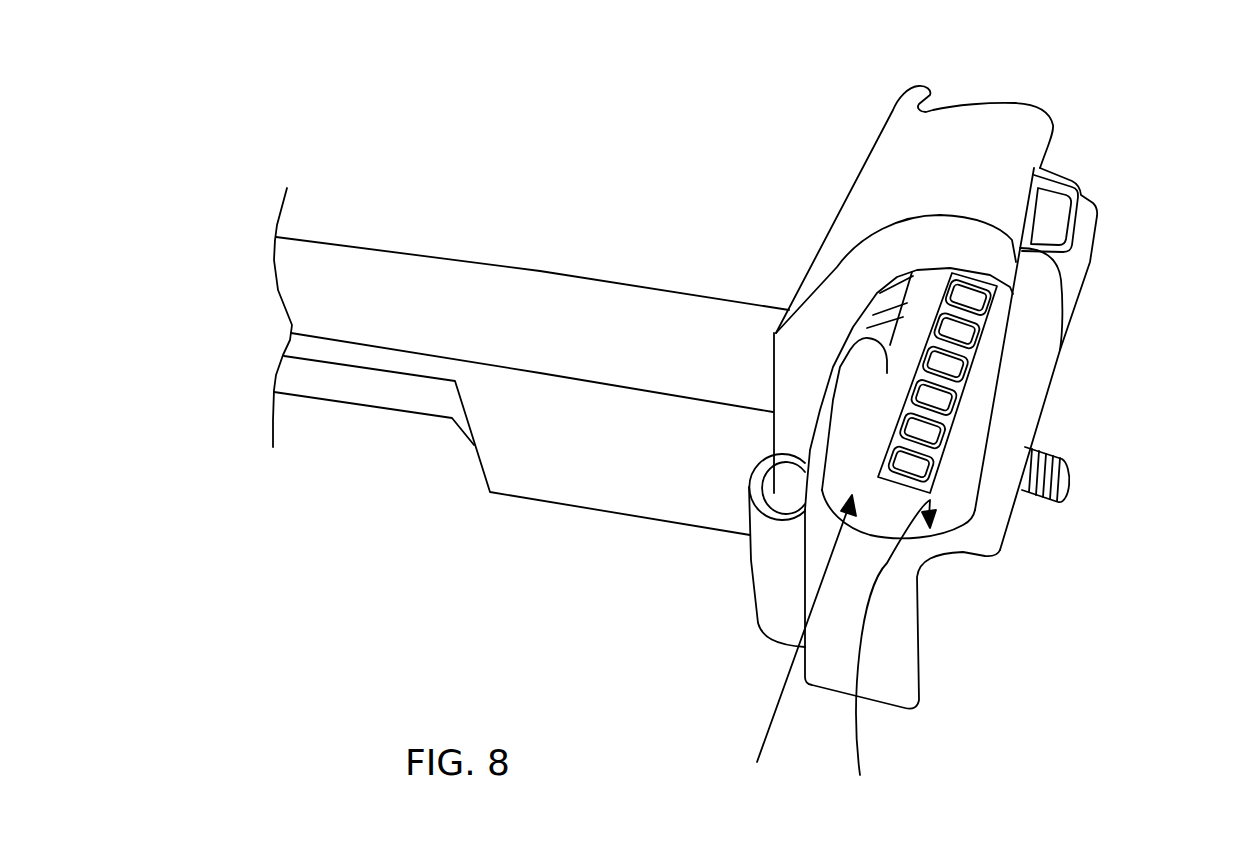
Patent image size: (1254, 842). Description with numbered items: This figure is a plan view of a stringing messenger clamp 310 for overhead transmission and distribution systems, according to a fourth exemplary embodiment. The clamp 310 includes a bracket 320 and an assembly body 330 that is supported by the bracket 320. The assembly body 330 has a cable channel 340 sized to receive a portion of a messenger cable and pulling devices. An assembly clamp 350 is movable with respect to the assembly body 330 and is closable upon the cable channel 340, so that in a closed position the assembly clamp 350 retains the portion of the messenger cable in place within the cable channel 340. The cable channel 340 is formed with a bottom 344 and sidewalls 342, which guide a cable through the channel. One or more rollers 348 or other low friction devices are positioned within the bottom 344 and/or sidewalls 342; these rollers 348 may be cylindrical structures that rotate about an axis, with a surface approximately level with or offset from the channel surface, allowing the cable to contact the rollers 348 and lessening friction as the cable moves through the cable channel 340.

The stringing messenger clamp 310 is at (1138, 51).
The bracket 320 is at (561, 460).
The assembly body 330 is at (887, 670).
The cable channel 340 is at (786, 645).
The sidewalls 342 is at (827, 447).
The bottom 344 is at (878, 651).
The rollers 348 is at (927, 432).
The assembly clamp 350 is at (908, 170).